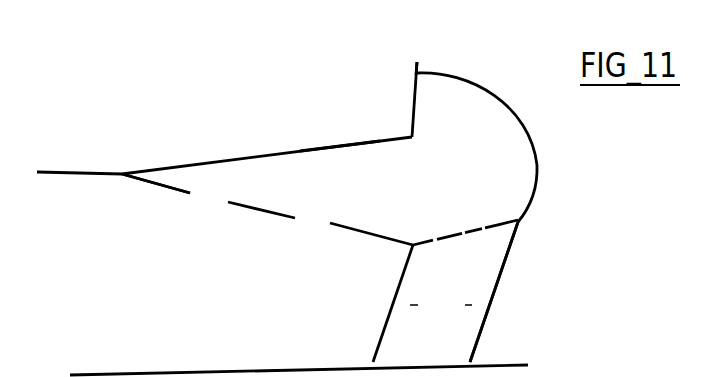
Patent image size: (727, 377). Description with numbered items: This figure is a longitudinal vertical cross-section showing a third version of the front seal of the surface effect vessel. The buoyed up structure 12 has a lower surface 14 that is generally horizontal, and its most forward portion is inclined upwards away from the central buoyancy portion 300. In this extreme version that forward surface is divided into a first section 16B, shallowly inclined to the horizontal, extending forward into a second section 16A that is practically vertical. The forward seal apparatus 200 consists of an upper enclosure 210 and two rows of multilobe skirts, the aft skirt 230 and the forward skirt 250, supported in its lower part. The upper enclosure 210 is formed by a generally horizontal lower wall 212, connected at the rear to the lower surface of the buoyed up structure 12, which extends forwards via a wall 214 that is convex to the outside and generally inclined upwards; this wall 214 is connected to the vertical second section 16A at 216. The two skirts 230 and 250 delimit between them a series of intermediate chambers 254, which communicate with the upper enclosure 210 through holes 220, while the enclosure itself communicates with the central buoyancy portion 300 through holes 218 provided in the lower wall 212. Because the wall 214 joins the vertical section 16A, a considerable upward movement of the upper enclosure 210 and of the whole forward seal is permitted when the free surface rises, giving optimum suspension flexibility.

The buoyed up structure 12 is at (295, 152).
The lower surface 14 is at (82, 178).
The second section 16A is at (424, 66).
The first section 16B is at (344, 154).
The forward seal apparatus 200 is at (541, 322).
The upper enclosure 210 is at (549, 142).
The lower wall 212 is at (185, 190).
The wall 214 is at (537, 178).
The connection 216 is at (413, 75).
The holes 218 is at (305, 224).
The holes 220 is at (498, 215).
The skirt 230 is at (378, 340).
The skirt 250 is at (498, 288).
The intermediate chambers 254 is at (441, 306).
The central buoyancy portion 300 is at (108, 317).